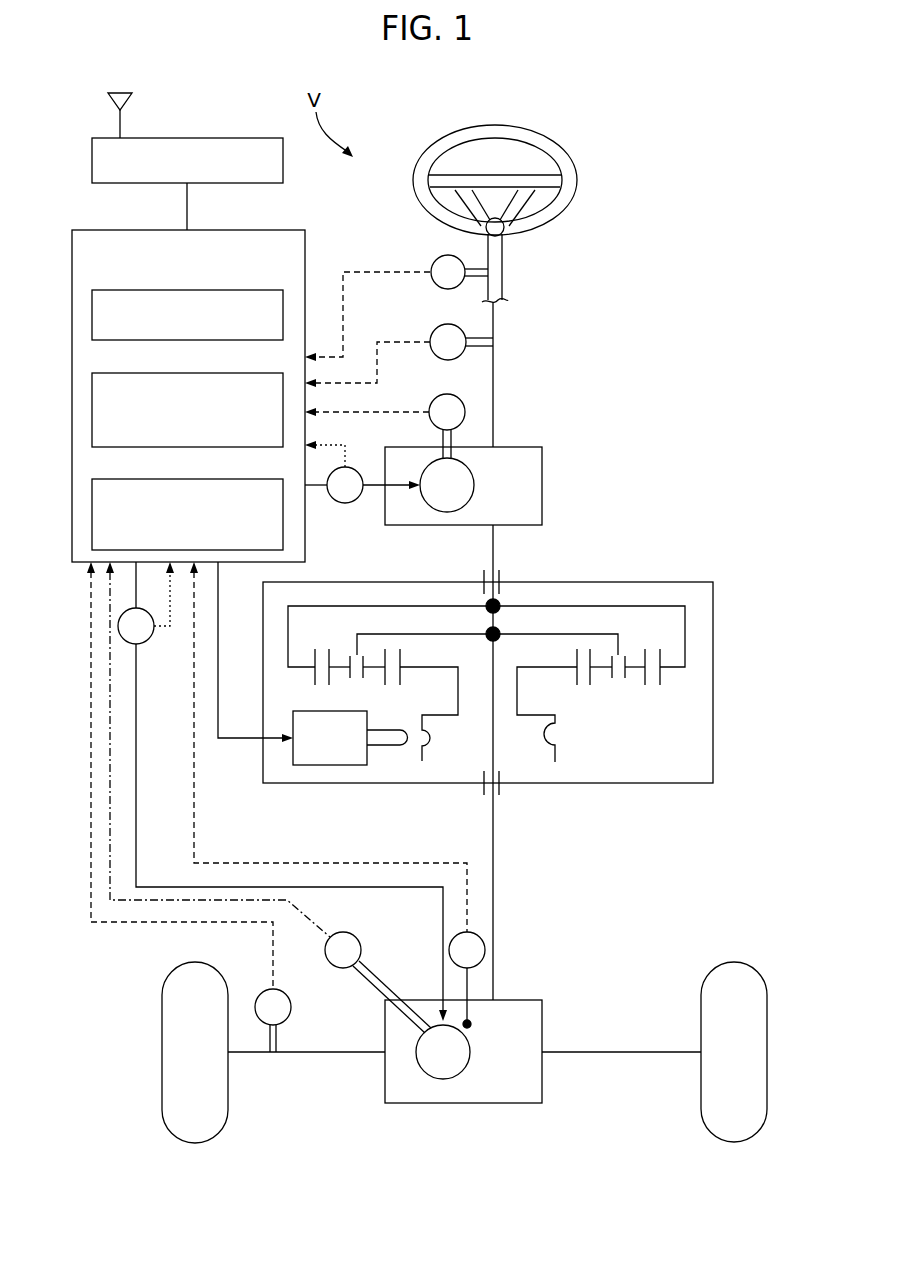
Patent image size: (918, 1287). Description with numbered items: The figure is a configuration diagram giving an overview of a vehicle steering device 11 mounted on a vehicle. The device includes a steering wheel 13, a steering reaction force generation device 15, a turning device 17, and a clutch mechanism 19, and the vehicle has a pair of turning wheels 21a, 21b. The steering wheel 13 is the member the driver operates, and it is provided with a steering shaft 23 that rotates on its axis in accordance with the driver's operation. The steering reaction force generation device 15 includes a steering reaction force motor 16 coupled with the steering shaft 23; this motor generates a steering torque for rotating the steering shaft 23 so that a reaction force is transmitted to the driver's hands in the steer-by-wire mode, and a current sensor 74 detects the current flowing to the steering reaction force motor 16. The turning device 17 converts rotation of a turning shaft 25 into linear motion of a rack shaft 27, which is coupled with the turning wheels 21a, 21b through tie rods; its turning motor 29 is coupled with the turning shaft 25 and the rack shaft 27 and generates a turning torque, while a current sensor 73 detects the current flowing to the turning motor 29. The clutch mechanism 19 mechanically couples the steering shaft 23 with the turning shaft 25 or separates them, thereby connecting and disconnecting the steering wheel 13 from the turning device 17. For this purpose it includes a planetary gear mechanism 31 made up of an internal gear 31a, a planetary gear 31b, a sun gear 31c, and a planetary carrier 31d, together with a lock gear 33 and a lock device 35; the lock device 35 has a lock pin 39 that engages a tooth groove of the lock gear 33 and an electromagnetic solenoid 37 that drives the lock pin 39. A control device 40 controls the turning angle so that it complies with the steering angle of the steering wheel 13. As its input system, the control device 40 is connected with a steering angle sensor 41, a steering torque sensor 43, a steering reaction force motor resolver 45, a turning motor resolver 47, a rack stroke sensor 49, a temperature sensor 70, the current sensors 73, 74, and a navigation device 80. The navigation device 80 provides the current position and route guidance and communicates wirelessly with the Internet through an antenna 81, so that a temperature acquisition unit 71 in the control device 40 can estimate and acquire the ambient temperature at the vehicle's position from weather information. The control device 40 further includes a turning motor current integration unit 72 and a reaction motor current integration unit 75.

The vehicle steering device 11 is at (620, 136).
The steering wheel 13 is at (578, 180).
The steering reaction force generation device 15 is at (473, 484).
The steering reaction force motor 16 is at (443, 502).
The turning device 17 is at (471, 1052).
The clutch mechanism 19 is at (654, 582).
The turning wheel 21a is at (176, 1013).
The turning wheel 21b is at (744, 975).
The steering shaft 23 is at (493, 382).
The turning shaft 25 is at (493, 886).
The rack shaft 27 is at (634, 1050).
The turning motor 29 is at (445, 1078).
The planetary gear mechanism 31 is at (553, 681).
The internal gear 31a is at (685, 620).
The planetary gear 31b is at (638, 682).
The sun gear 31c is at (566, 680).
The planetary carrier 31d is at (618, 640).
The lock gear 33 is at (556, 723).
The lock device 35 is at (350, 786).
The electromagnetic solenoid 37 is at (352, 752).
The lock pin 39 is at (390, 742).
The control device 40 is at (258, 230).
The steering angle sensor 41 is at (435, 263).
The steering torque sensor 43 is at (435, 330).
The steering reaction force motor resolver 45 is at (435, 400).
The turning motor resolver 47 is at (355, 937).
The rack stroke sensor 49 is at (283, 992).
The temperature sensor 70 is at (450, 940).
The temperature acquisition unit 71 is at (248, 290).
The turning motor current integration unit 72 is at (248, 373).
The current sensor 73 is at (150, 640).
The current sensor 74 is at (345, 503).
The reaction motor current integration unit 75 is at (248, 479).
The navigation device 80 is at (242, 138).
The antenna 81 is at (121, 92).